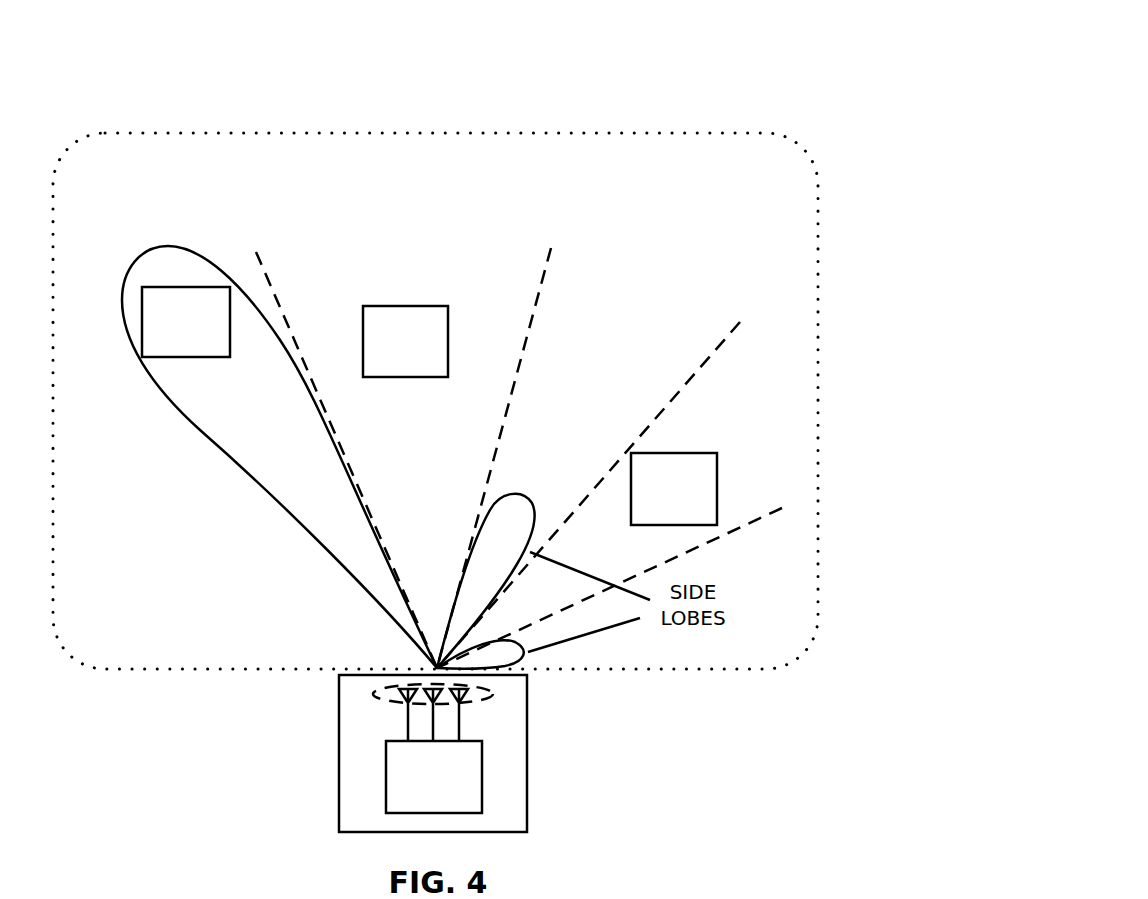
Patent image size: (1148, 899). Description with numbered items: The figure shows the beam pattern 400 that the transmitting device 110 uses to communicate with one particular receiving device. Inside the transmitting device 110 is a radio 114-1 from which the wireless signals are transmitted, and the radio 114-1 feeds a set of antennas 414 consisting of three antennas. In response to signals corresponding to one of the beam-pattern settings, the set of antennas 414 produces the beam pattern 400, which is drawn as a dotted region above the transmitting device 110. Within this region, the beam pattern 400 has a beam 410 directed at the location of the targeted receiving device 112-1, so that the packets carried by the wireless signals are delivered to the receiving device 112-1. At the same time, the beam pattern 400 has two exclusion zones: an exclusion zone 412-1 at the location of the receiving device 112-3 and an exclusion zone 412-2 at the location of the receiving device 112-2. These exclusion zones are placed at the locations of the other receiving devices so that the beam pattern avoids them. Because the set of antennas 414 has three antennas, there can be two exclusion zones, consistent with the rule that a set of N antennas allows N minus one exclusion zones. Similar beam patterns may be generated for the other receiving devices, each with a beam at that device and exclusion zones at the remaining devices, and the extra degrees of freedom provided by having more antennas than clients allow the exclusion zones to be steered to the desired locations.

The beam pattern 400 is at (740, 133).
The beam 410 is at (193, 250).
The exclusion zone 412-1 is at (256, 244).
The exclusion zone 412-2 is at (792, 504).
The receiving device 112-1 is at (186, 322).
The receiving device 112-2 is at (674, 489).
The receiving device 112-3 is at (405, 341).
The transmitting device 110 is at (527, 755).
The radio 114-1 is at (434, 777).
The set of antennas 414 is at (487, 697).